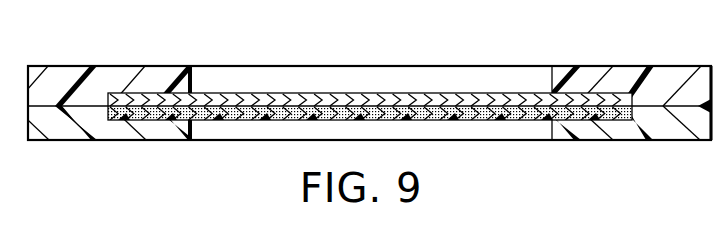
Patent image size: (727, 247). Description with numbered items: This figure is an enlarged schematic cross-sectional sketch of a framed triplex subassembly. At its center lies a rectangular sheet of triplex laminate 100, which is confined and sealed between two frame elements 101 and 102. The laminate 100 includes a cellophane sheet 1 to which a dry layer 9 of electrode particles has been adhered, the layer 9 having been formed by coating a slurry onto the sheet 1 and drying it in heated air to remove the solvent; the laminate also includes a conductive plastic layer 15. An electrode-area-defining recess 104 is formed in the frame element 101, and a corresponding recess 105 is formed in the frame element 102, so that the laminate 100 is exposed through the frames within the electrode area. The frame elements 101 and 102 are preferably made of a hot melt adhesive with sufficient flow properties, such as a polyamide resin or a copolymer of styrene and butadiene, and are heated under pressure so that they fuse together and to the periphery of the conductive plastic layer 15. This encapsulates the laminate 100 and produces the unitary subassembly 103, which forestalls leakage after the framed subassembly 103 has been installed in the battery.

The cellophane sheet 1 is at (322, 93).
The dry layer 9 is at (418, 106).
The conductive plastic layer 15 is at (388, 121).
The triplex laminate 100 is at (457, 70).
The frame element 101 is at (643, 66).
The frame element 102 is at (657, 141).
The unitary subassembly 103 is at (262, 168).
The electrode area defining recess 104 is at (192, 80).
The recess 105 is at (550, 128).